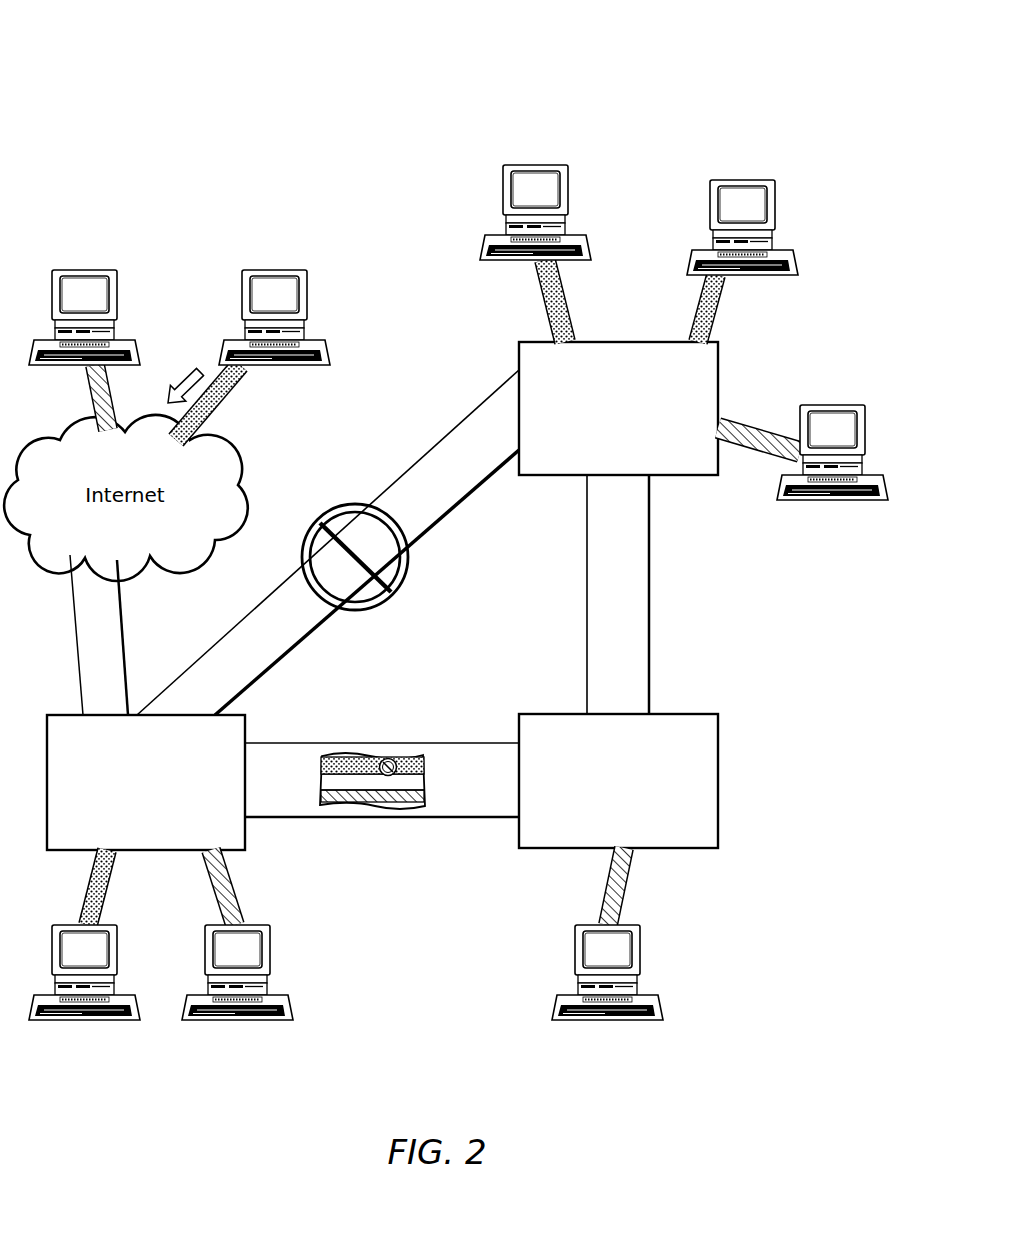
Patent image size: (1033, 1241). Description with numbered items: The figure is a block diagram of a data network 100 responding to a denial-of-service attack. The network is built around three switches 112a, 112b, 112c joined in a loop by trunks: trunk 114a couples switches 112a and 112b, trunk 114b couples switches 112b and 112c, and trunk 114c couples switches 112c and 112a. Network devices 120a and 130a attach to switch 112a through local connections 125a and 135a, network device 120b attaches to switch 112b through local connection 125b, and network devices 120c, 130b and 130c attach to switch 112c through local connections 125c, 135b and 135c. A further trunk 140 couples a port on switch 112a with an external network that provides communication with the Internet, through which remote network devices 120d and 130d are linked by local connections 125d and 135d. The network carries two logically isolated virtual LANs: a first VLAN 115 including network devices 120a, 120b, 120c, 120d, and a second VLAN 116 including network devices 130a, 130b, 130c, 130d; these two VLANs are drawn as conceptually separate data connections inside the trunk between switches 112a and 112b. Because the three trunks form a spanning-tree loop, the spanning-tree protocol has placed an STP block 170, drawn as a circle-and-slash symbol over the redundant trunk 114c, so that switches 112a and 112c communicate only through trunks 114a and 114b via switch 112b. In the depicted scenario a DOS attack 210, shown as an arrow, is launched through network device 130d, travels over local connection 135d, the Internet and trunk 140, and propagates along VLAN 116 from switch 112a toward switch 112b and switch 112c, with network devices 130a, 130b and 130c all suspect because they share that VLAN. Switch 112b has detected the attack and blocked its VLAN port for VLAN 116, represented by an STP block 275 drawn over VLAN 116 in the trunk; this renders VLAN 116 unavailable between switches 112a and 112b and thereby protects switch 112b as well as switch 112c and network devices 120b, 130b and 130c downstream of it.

The data network 100 is at (136, 36).
The switch 112a is at (172, 840).
The switch 112b is at (657, 840).
The switch 112c is at (657, 467).
The trunk 114a is at (322, 817).
The trunk 114b is at (652, 560).
The trunk 114c is at (452, 510).
The first VLAN 115 is at (370, 808).
The second VLAN 116 is at (345, 756).
The network device 120a is at (260, 1022).
The network device 120b is at (608, 1022).
The network device 120c is at (835, 405).
The network device 120d is at (78, 268).
The local connection 125a is at (238, 879).
The local connection 125b is at (632, 885).
The local connection 125c is at (750, 420).
The local connection 125d is at (80, 378).
The network device 130a is at (108, 1022).
The network device 130b is at (740, 178).
The network device 130c is at (538, 165).
The network device 130d is at (262, 268).
The local connection 135a is at (120, 883).
The local connection 135b is at (725, 290).
The local connection 135c is at (570, 290).
The local connection 135d is at (238, 395).
The trunk 140 is at (125, 622).
The STP block 170 is at (390, 600).
The DOS attack 210 is at (186, 368).
The STP block 275 is at (397, 752).